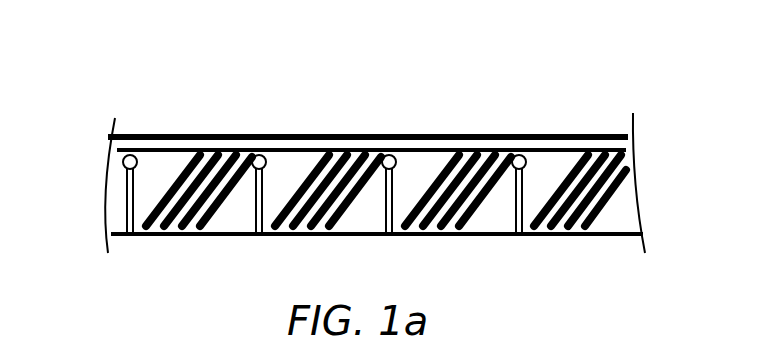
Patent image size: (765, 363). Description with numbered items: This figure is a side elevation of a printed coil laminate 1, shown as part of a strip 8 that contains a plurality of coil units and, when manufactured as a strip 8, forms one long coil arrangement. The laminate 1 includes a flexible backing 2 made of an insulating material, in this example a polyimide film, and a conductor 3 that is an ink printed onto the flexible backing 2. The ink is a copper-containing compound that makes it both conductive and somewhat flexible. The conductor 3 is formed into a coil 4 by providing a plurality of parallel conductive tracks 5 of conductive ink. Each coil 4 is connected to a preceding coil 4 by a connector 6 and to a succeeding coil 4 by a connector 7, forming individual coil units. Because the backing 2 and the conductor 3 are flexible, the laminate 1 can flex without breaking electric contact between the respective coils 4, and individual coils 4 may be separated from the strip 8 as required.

The printed coil laminate 1 is at (180, 117).
The flexible backing 2 is at (607, 223).
The conductor 3 is at (554, 146).
The coil 4 is at (316, 239).
The parallel conductive tracks 5 is at (437, 170).
The connector 6 is at (293, 147).
The connector 7 is at (388, 152).
The strip 8 is at (112, 207).